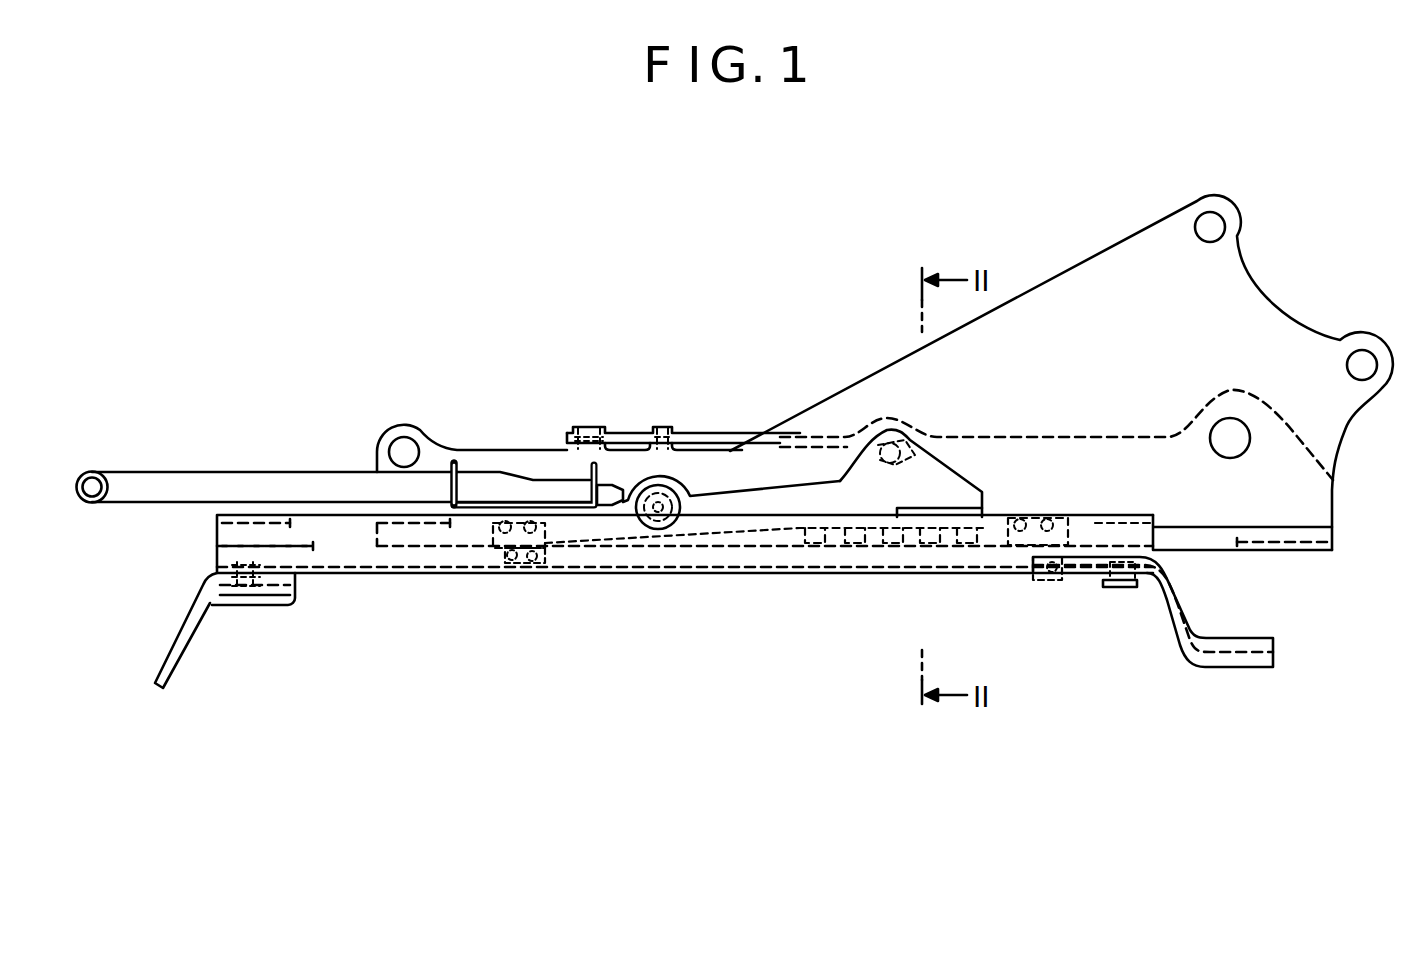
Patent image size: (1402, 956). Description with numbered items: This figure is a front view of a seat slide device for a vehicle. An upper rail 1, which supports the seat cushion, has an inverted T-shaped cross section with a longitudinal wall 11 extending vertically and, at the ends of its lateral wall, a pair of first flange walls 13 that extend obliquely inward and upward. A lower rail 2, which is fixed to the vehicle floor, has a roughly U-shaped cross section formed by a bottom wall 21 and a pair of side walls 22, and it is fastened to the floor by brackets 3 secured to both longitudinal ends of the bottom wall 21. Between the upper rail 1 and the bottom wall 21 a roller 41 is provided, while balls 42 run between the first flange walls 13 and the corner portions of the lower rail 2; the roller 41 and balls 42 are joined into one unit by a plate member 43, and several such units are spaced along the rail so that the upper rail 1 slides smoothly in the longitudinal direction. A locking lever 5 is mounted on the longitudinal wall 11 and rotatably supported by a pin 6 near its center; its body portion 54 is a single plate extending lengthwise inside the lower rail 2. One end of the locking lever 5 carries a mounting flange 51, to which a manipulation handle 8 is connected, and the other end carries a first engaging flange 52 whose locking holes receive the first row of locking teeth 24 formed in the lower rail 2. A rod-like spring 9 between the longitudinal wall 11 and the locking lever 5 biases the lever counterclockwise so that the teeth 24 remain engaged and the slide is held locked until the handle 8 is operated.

The upper rail 1 is at (1290, 552).
The lower rail 2 is at (217, 537).
The brackets 3 is at (170, 665).
The locking lever 5 is at (782, 508).
The pin 6 is at (650, 515).
The manipulation handle 8 is at (155, 471).
The rod-like spring 9 is at (712, 432).
The longitudinal wall 11 is at (551, 450).
The first flange walls 13 is at (1207, 540).
The bottom wall 21 is at (386, 574).
The side walls 22 is at (340, 530).
The first row of locking teeth 24 is at (883, 532).
The roller 41 is at (522, 566).
The balls 42 is at (507, 517).
The plate member 43 is at (495, 540).
The mounting flange 51 is at (455, 462).
The first engaging flange 52 is at (977, 522).
The body portion 54 is at (843, 500).